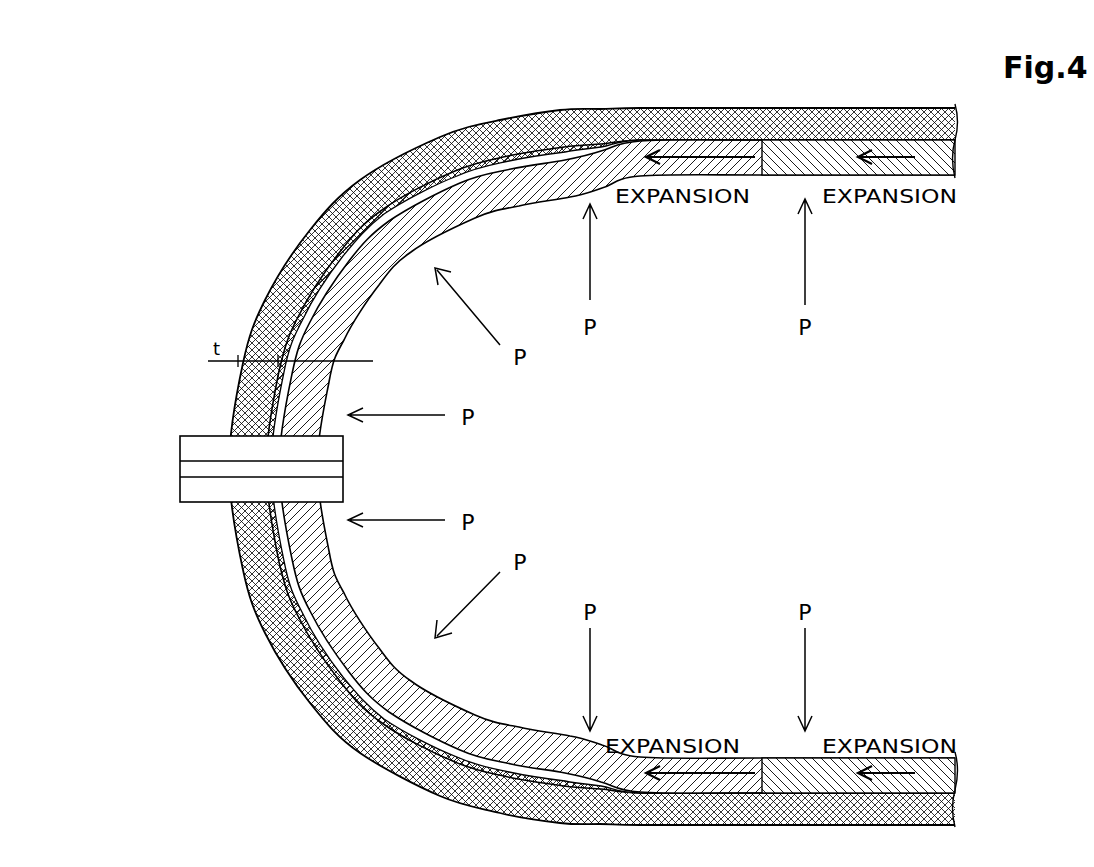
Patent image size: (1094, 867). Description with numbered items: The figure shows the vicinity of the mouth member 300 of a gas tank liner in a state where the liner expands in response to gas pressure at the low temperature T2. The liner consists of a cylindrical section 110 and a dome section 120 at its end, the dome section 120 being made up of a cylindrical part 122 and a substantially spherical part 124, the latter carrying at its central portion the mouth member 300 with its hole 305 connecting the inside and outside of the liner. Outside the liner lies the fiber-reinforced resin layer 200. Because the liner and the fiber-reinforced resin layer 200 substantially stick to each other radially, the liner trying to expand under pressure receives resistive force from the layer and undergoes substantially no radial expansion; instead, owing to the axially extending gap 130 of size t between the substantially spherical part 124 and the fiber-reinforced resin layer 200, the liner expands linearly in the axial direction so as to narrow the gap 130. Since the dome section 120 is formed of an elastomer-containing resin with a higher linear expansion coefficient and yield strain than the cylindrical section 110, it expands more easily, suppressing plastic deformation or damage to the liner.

The cylindrical section 110 is at (846, 140).
The dome section 120 is at (610, 415).
The cylindrical part 122 is at (630, 135).
The substantially spherical part 124 is at (467, 175).
The gap 130 is at (280, 292).
The fiber-reinforced resin layer 200 is at (748, 108).
The mouth member 300 is at (200, 502).
The hole 305 is at (186, 461).